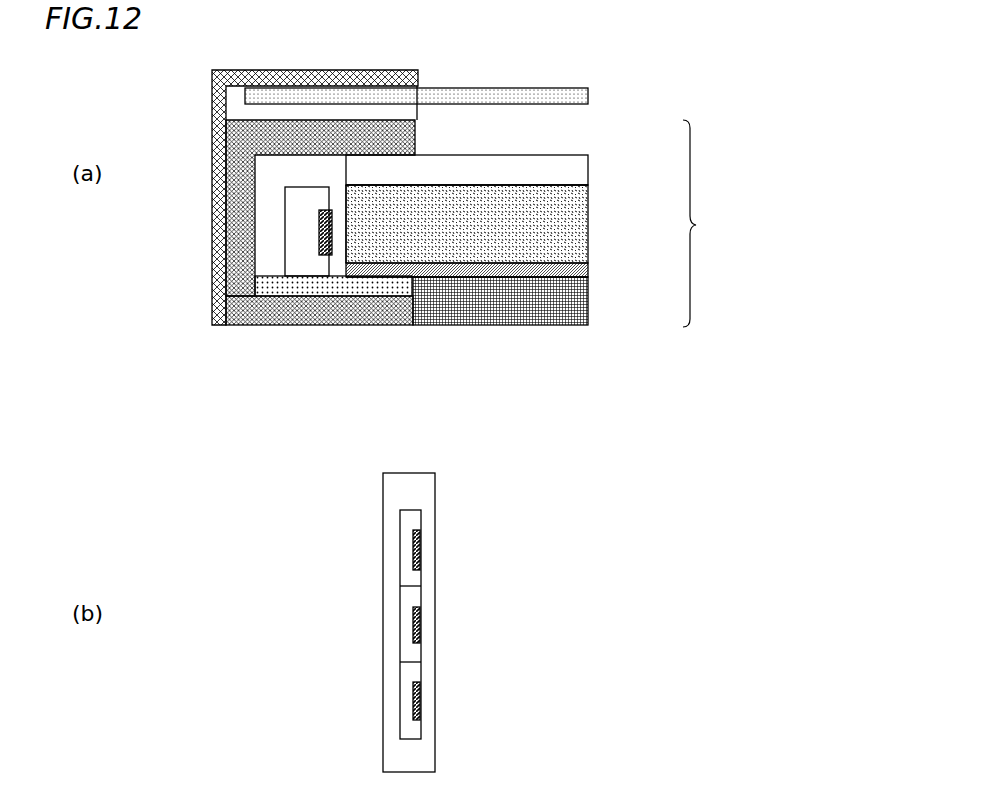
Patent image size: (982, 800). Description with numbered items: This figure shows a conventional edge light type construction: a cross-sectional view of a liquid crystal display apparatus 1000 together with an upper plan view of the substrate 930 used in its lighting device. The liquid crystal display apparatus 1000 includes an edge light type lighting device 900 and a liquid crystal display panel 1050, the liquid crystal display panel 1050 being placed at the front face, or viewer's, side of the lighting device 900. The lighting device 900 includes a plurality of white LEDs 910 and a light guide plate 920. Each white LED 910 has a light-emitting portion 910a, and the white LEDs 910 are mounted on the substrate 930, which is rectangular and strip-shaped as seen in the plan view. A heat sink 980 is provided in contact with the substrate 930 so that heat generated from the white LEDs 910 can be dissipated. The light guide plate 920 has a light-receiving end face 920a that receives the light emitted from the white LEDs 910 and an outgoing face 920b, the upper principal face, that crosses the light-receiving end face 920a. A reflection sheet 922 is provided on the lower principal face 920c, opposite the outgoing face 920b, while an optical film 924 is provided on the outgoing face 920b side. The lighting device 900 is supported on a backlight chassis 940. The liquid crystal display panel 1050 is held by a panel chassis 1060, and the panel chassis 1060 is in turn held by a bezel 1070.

The liquid crystal display apparatus 1000 is at (690, 56).
The bezel 1070 is at (262, 70).
The panel chassis 1060 is at (330, 118).
The liquid crystal display panel 1050 is at (570, 98).
The heat sink 980 is at (391, 325).
The lighting device 900 is at (708, 223).
The optical film 924 is at (568, 174).
The light guide plate 920 is at (572, 225).
The light-receiving end face 920a is at (347, 211).
The outgoing face 920b is at (486, 185).
The lower principal face 920c is at (455, 278).
The reflection sheet 922 is at (586, 272).
The backlight chassis 940 is at (517, 310).
The substrate 930 is at (284, 285).
The white LED 910 is at (305, 247).
The light-emitting portion 910a is at (333, 257).